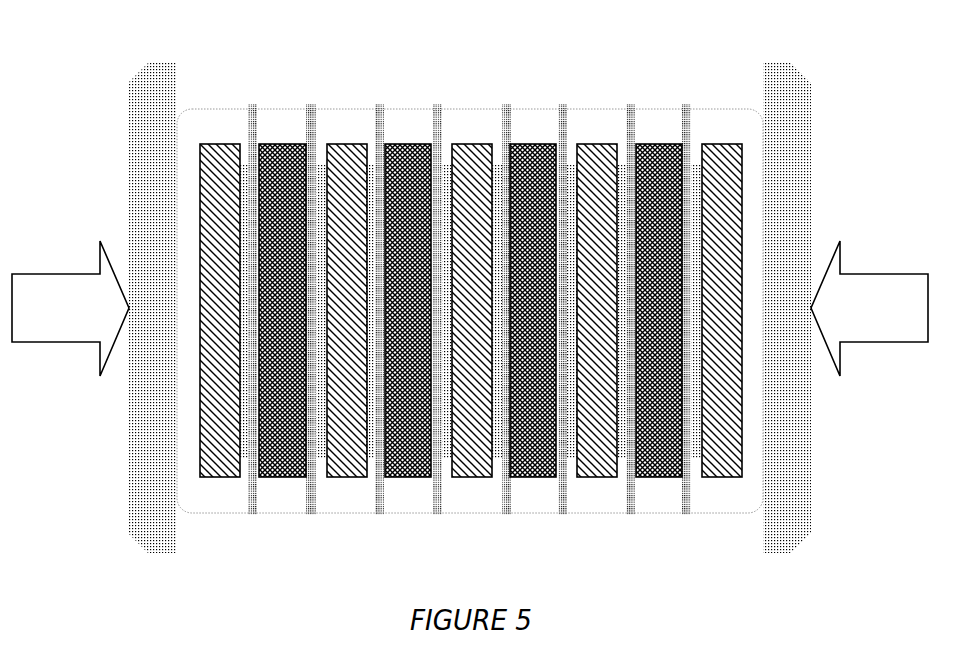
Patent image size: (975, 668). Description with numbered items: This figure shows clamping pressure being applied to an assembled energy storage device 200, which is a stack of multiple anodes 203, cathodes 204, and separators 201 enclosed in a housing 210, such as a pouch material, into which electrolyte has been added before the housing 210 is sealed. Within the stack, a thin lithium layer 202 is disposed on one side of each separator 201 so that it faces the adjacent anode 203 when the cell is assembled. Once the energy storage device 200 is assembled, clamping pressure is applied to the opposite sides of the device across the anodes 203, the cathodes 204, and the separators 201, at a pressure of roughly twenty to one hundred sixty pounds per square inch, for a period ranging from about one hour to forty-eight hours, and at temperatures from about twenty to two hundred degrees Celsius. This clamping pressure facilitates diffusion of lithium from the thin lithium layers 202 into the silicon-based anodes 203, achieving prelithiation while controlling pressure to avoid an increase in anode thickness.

The energy storage device 200 is at (667, 68).
The separator 201 is at (311, 108).
The lithium layer 202 is at (443, 147).
The anode 203 is at (597, 143).
The cathode 204 is at (533, 143).
The housing 210 is at (367, 108).